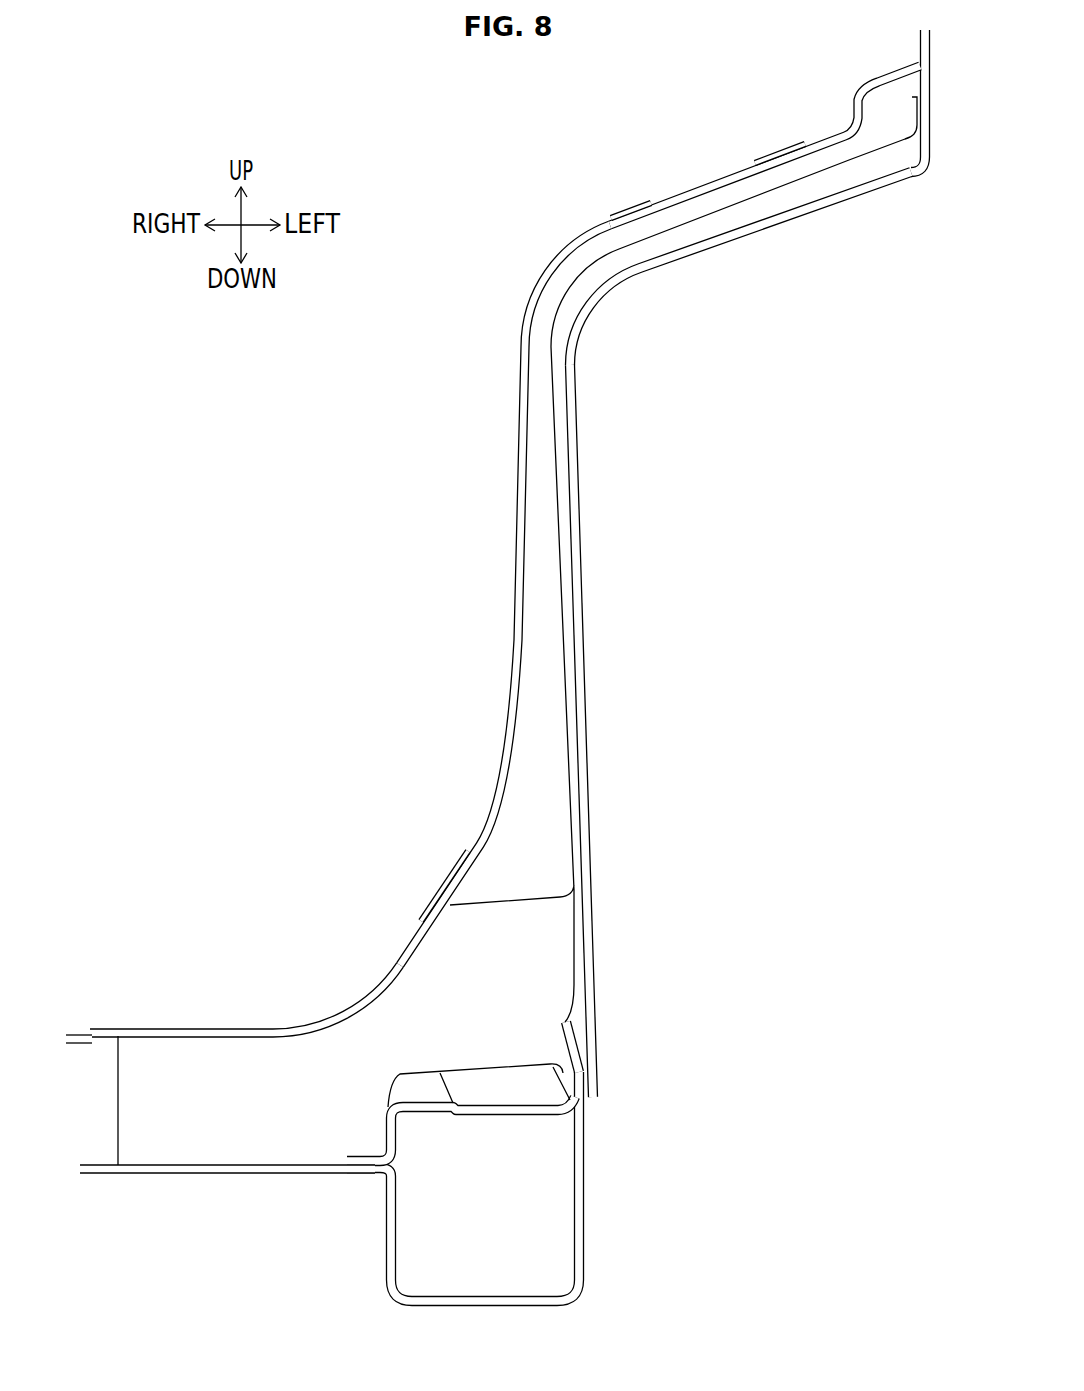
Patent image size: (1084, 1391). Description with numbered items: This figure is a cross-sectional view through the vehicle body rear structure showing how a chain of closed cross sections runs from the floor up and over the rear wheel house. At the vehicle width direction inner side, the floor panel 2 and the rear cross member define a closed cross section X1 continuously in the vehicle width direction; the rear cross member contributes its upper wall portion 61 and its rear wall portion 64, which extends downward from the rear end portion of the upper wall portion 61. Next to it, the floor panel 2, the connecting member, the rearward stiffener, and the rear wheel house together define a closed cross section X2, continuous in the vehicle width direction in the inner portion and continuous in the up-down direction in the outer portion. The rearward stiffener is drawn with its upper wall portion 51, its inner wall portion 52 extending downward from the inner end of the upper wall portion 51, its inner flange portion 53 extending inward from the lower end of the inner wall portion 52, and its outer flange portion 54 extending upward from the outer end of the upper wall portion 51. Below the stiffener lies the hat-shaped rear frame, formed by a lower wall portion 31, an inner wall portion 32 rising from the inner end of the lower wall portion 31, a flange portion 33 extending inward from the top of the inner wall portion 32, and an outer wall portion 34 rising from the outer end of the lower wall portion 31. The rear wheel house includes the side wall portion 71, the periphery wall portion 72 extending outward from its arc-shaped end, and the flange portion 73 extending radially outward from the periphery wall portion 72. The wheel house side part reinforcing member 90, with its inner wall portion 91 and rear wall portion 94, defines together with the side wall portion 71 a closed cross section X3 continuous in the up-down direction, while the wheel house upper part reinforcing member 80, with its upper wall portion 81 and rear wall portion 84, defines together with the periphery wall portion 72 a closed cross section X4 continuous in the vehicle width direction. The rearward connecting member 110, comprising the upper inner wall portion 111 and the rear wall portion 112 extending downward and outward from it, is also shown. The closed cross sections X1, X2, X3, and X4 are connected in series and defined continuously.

The floor panel 2 is at (240, 1178).
The lower wall portion 31 is at (500, 1310).
The inner wall portion 32 is at (385, 1250).
The flange portion 33 is at (362, 1180).
The outer wall portion 34 is at (583, 1220).
The upper wall portion 51 is at (483, 1117).
The inner wall portion 52 is at (383, 1118).
The inner flange portion 53 is at (362, 1160).
The outer flange portion 54 is at (563, 1057).
The upper wall portion 61 is at (74, 1033).
The rear wall portion 64 is at (96, 1130).
The side wall portion 71 is at (762, 563).
The periphery wall portion 72 is at (730, 243).
The flange portion 73 is at (930, 133).
The wheel house upper part reinforcing member 80 is at (735, 206).
The upper wall portion 81 is at (683, 188).
The rear wall portion 84 is at (748, 213).
The wheel house side part reinforcing member 90 is at (492, 623).
The inner wall portion 91 is at (513, 630).
The rear wall portion 94 is at (540, 572).
The rearward connecting member 110 is at (245, 981).
The upper inner wall portion 111 is at (230, 1028).
The rear wall portion 112 is at (145, 1004).
The closed cross section X1 is at (92, 1098).
The closed cross section X2 is at (182, 1145).
The closed cross section X3 is at (548, 768).
The closed cross section X4 is at (810, 190).